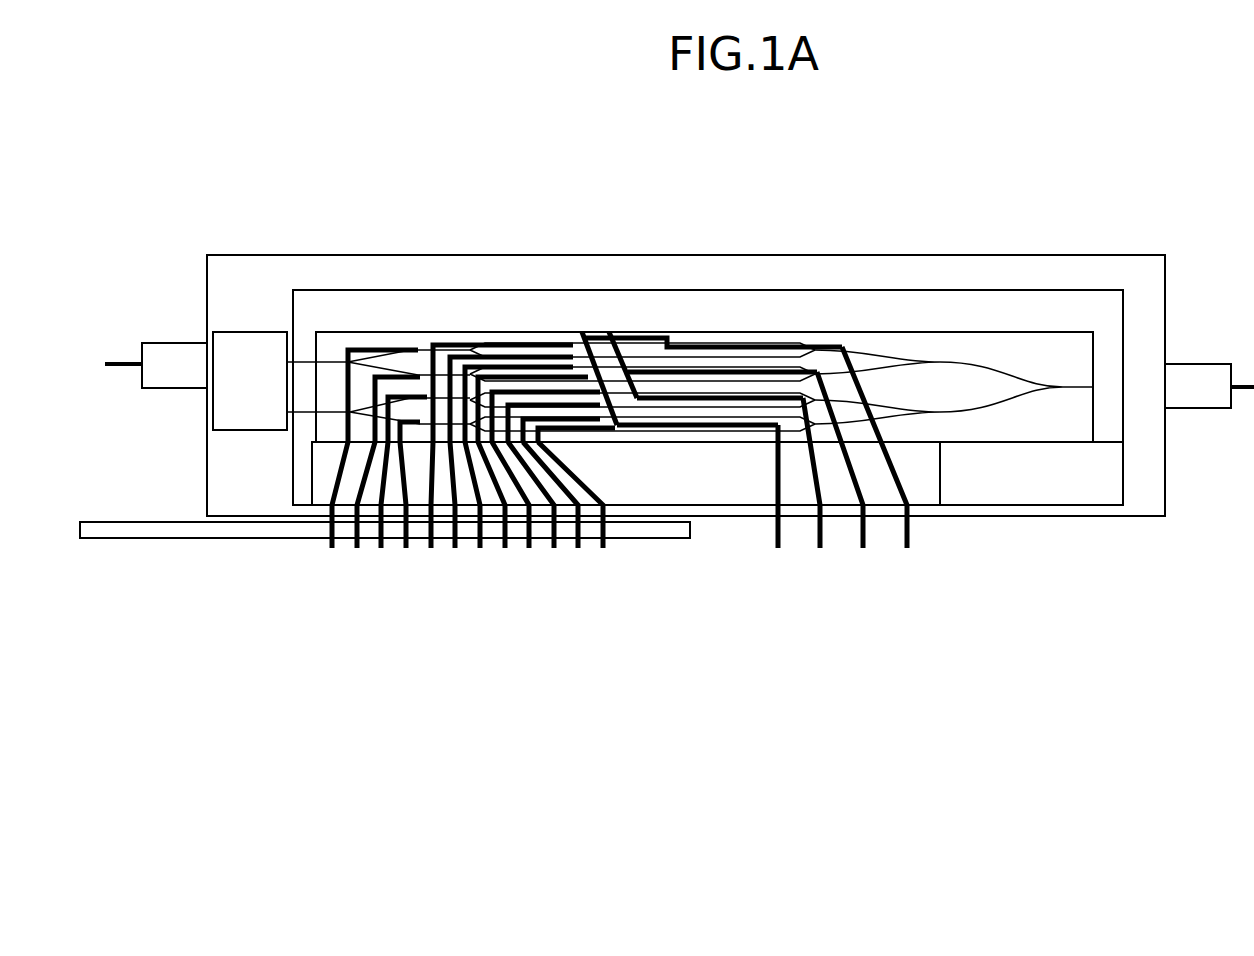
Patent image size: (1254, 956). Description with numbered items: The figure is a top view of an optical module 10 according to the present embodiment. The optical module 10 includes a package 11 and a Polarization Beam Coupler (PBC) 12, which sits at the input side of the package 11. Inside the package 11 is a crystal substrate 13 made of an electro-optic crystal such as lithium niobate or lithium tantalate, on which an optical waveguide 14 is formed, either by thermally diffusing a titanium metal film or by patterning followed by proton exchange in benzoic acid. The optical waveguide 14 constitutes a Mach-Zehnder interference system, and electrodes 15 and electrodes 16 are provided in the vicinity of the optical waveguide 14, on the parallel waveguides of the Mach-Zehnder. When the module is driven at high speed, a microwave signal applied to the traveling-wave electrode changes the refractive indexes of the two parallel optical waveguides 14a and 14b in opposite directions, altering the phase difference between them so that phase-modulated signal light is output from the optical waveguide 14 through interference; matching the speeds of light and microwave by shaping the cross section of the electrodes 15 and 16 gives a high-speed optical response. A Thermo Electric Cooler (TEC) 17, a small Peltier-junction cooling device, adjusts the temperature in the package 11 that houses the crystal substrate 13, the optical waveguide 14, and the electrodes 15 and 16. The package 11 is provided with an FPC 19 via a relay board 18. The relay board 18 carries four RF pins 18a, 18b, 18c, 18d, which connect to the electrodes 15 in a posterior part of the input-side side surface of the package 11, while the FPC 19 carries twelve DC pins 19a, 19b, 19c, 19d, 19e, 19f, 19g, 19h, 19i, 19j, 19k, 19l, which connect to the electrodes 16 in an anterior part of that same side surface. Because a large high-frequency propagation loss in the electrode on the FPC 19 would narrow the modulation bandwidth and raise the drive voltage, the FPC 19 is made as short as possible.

The optical module 10 is at (968, 256).
The package 11 is at (1108, 517).
The Polarization Beam Coupler (PBC) 12 is at (250, 332).
The crystal substrate 13 is at (1077, 423).
The optical waveguide 14 is at (1072, 387).
The optical waveguide 14a is at (600, 335).
The optical waveguide 14b is at (632, 335).
The electrodes 15 is at (683, 425).
The electrodes 16 is at (409, 422).
The Thermo Electric Cooler (TEC) 17 is at (1040, 490).
The relay board 18 is at (740, 495).
The RF pin 18a is at (781, 548).
The RF pin 18b is at (823, 548).
The RF pin 18c is at (866, 548).
The RF pin 18d is at (910, 548).
The FPC 19 is at (228, 530).
The DC pin 19a is at (335, 548).
The DC pin 19b is at (360, 548).
The DC pin 19c is at (384, 548).
The DC pin 19d is at (409, 548).
The DC pin 19e is at (434, 548).
The DC pin 19f is at (458, 548).
The DC pin 19g is at (483, 548).
The DC pin 19h is at (508, 548).
The DC pin 19i is at (532, 548).
The DC pin 19j is at (557, 548).
The DC pin 19k is at (581, 548).
The DC pin 19l is at (606, 548).